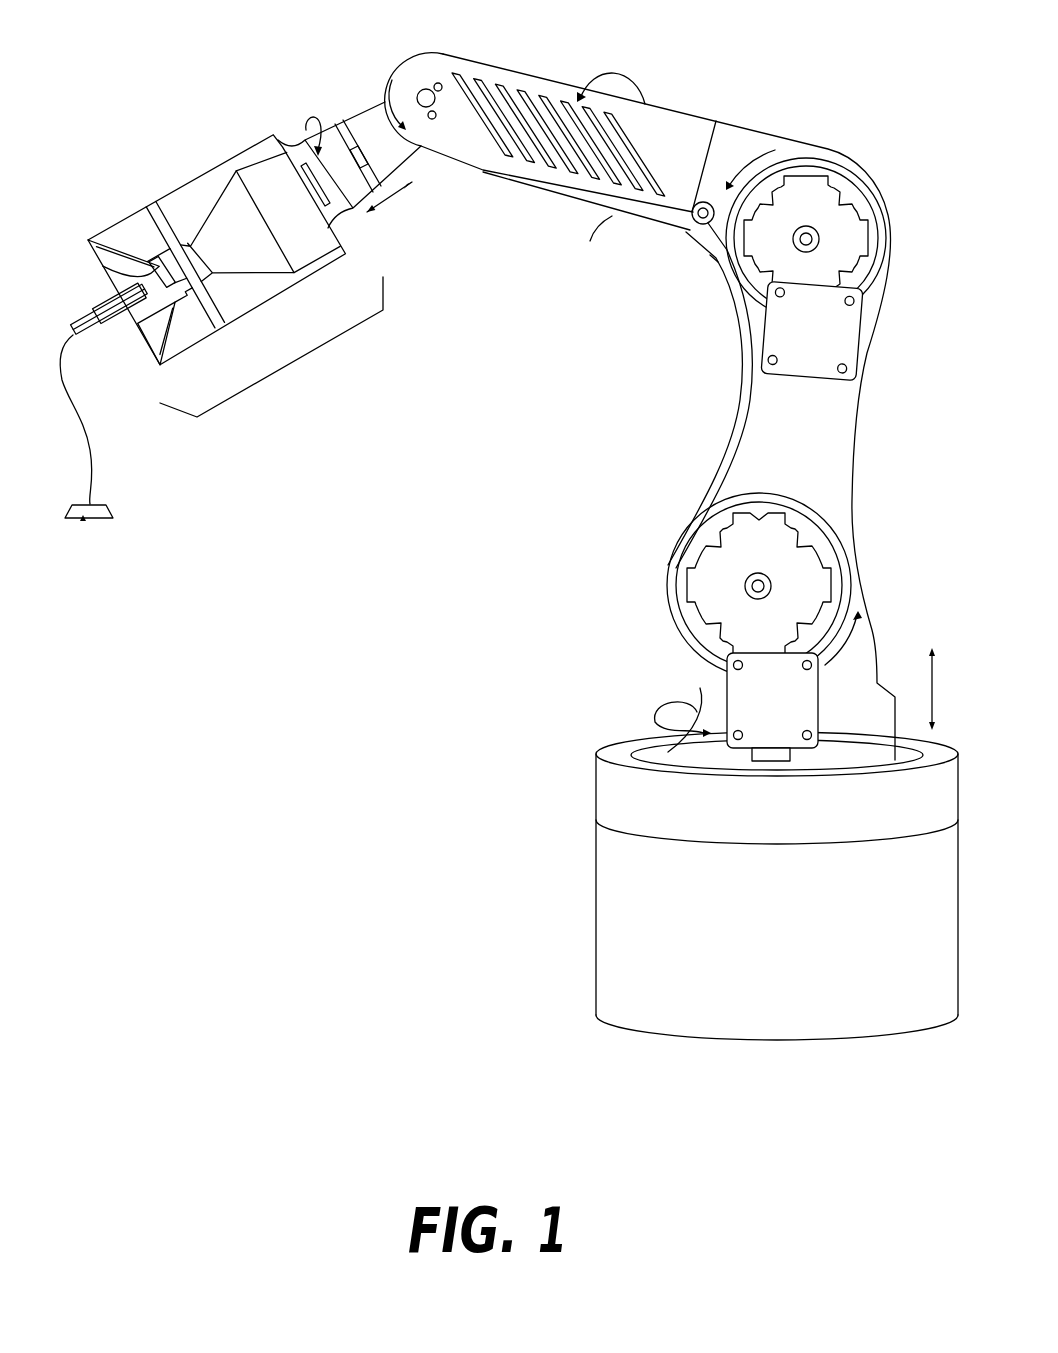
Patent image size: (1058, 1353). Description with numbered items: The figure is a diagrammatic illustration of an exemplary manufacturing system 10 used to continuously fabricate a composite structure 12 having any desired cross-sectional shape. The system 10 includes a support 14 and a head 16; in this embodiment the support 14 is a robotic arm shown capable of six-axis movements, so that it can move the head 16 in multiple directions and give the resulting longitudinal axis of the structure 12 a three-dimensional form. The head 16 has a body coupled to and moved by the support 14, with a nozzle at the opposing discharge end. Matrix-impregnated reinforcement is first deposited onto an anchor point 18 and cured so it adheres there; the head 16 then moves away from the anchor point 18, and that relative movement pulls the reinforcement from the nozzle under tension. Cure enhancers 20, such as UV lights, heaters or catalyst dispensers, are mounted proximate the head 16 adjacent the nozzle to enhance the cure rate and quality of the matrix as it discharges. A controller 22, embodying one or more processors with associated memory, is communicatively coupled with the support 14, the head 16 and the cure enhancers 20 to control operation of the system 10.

The system 10 is at (403, 784).
The composite structure 12 is at (89, 470).
The support 14 is at (800, 456).
The head 16 is at (300, 357).
The anchor point 18 is at (83, 521).
The cure enhancer 20 is at (113, 267).
The controller 22 is at (783, 713).